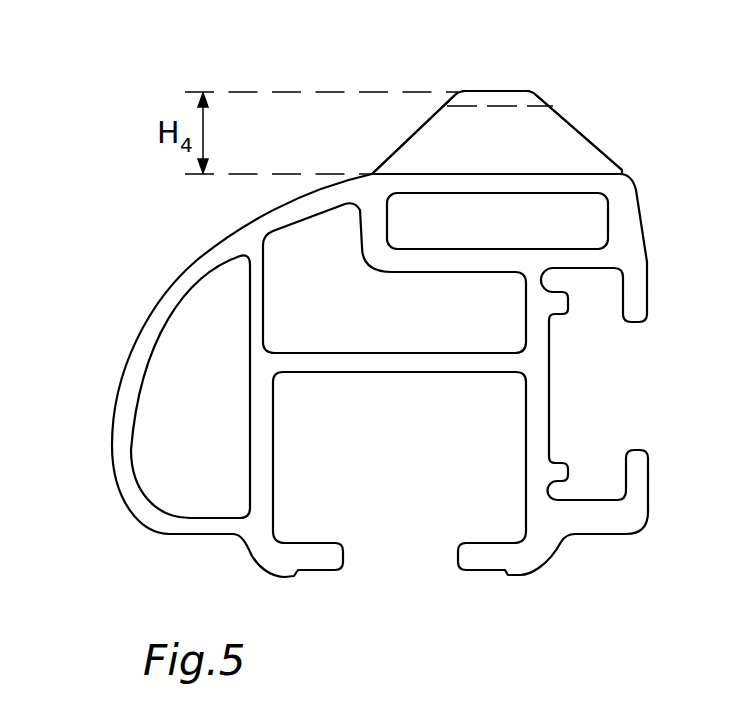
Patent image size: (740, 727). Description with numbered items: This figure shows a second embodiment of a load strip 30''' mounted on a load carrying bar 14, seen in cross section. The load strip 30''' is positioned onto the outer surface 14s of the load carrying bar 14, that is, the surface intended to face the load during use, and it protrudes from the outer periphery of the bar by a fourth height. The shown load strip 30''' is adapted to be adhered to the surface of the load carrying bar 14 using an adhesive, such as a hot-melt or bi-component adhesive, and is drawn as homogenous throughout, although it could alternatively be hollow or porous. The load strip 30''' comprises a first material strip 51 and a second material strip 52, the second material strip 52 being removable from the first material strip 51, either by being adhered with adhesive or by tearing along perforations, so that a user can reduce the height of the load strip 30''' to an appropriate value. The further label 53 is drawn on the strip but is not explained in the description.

The rail body 14 is at (165, 269).
The top surface of rail 14s is at (585, 172).
The protrusion 30''' is at (539, 115).
The first inclined surface 51 is at (418, 138).
The top flat surface 52 is at (490, 97).
The second inclined surface 53 is at (528, 106).